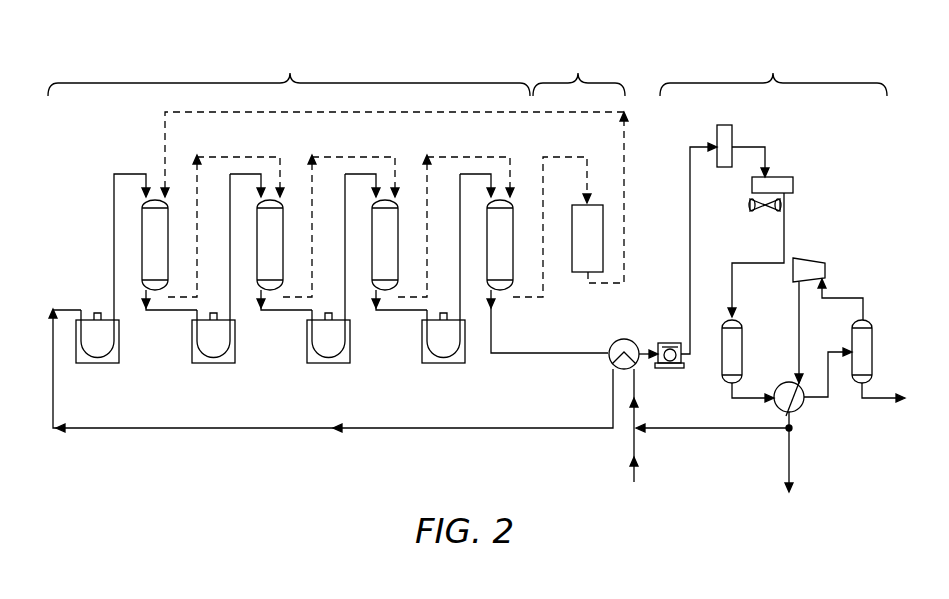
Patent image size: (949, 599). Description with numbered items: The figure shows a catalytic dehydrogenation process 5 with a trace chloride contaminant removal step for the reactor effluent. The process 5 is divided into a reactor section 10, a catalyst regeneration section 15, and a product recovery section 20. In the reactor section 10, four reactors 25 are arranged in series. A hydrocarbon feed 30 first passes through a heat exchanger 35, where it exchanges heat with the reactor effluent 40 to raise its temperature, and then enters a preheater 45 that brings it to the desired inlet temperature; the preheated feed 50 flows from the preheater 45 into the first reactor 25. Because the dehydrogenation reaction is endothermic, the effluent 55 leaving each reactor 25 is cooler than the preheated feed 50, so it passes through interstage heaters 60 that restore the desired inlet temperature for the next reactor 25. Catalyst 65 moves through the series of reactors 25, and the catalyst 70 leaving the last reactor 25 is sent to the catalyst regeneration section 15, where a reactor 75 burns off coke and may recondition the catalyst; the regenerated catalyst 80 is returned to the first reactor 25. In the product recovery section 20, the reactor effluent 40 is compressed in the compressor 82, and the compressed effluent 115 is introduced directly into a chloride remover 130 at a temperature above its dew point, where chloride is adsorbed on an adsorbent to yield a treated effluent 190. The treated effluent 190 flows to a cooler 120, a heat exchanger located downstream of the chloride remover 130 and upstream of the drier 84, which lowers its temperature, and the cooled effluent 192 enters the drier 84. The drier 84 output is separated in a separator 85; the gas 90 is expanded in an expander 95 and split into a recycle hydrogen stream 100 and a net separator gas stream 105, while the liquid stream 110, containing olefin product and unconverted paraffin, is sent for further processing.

The catalytic dehydrogenation process 5 is at (44, 58).
The reactor section 10 is at (289, 72).
The catalyst regeneration section 15 is at (579, 72).
The product recovery section 20 is at (773, 72).
The reactor 25 is at (166, 254).
The hydrocarbon feed 30 is at (632, 448).
The heat exchanger 35 is at (626, 338).
The reactor effluent 40 is at (549, 352).
The preheater 45 is at (98, 365).
The preheated feed 50 is at (112, 257).
The effluent 55 is at (177, 312).
The interstage heater 60 is at (215, 365).
The catalyst 65 is at (255, 157).
The catalyst leaving last reactor 70 is at (563, 157).
The regeneration reactor 75 is at (600, 243).
The regenerated catalyst 80 is at (627, 198).
The compressor 82 is at (671, 340).
The drier 84 is at (737, 317).
The separator 85 is at (873, 352).
The gas 90 is at (843, 292).
The expander 95 is at (810, 255).
The recycle hydrogen stream 100 is at (713, 430).
The net separator gas stream 105 is at (793, 464).
The liquid stream 110 is at (875, 402).
The compressed effluent 115 is at (690, 248).
The cooler 120 is at (793, 185).
The chloride remover 130 is at (725, 123).
The treated effluent 190 is at (758, 140).
The cooled effluent 192 is at (783, 228).